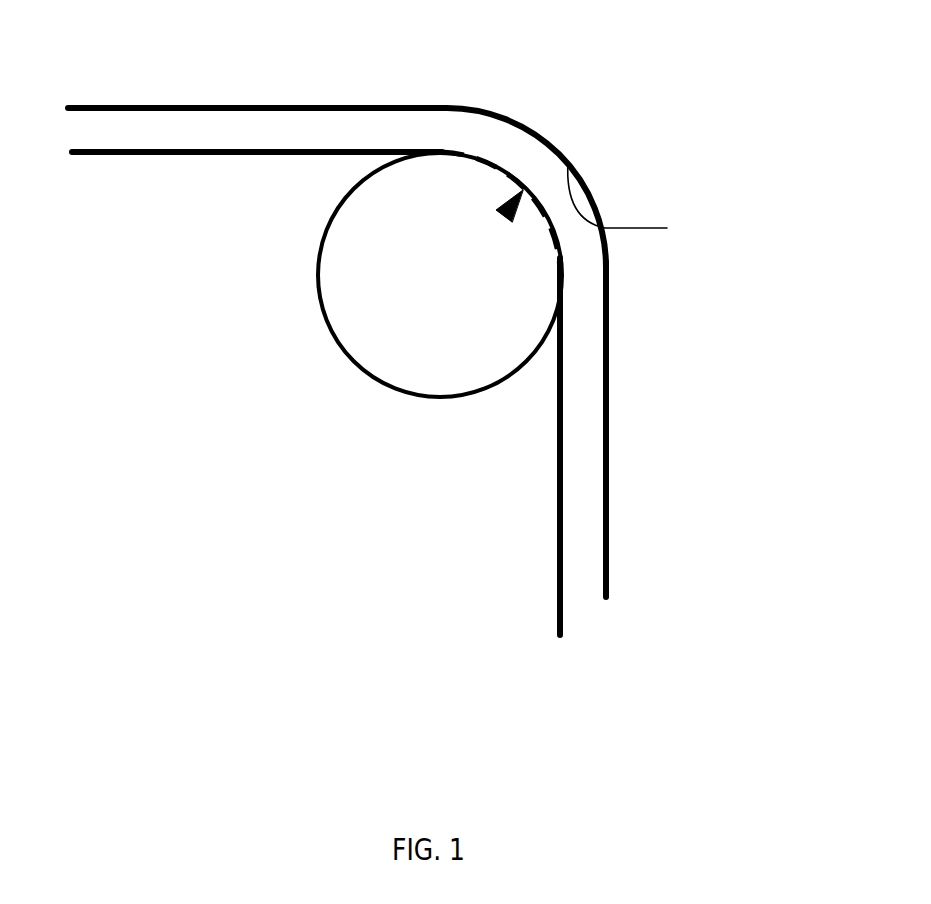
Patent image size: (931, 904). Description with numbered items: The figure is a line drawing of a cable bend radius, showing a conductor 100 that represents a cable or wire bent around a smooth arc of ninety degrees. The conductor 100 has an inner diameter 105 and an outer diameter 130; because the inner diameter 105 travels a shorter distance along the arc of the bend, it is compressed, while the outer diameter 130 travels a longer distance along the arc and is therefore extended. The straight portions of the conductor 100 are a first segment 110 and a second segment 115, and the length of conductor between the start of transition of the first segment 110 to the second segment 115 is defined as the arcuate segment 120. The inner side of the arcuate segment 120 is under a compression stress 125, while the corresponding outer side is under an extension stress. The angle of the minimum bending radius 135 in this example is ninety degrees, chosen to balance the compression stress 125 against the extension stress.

The conductor 100 is at (436, 317).
The inner diameter 105 is at (485, 162).
The first segment 110 is at (610, 357).
The second segment 115 is at (255, 105).
The arcuate segment 120 is at (482, 105).
The compression stress 125 is at (505, 182).
The outer diameter 130 is at (667, 228).
The minimum bending radius 135 is at (504, 216).